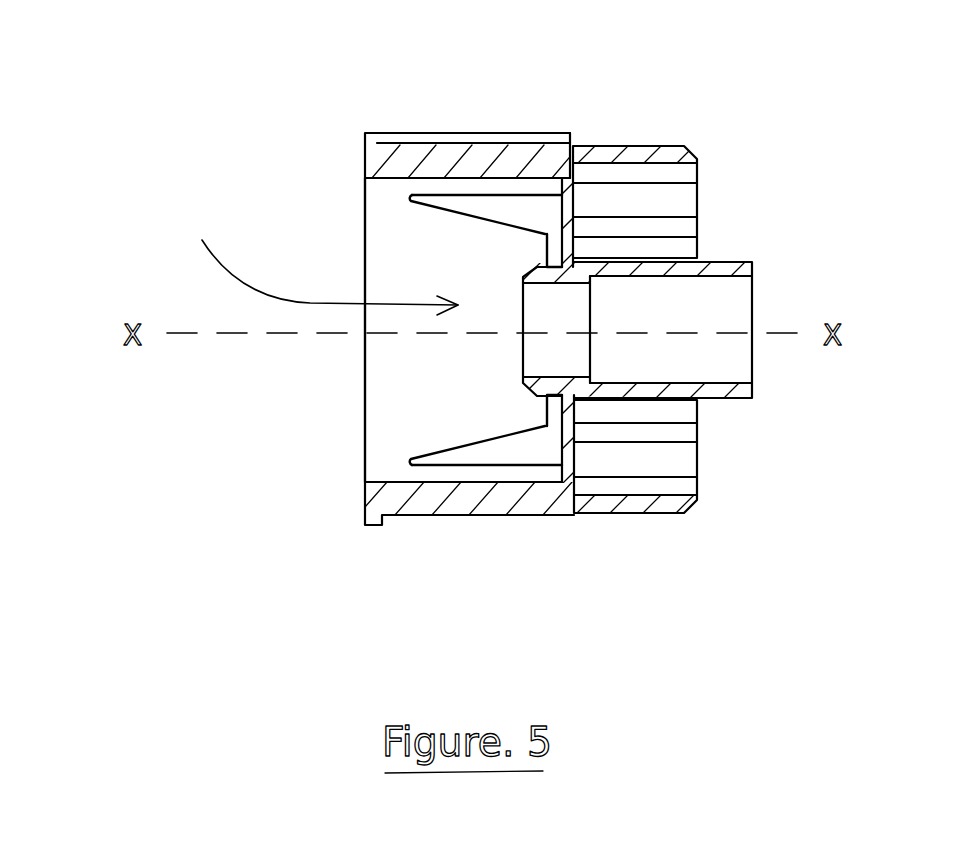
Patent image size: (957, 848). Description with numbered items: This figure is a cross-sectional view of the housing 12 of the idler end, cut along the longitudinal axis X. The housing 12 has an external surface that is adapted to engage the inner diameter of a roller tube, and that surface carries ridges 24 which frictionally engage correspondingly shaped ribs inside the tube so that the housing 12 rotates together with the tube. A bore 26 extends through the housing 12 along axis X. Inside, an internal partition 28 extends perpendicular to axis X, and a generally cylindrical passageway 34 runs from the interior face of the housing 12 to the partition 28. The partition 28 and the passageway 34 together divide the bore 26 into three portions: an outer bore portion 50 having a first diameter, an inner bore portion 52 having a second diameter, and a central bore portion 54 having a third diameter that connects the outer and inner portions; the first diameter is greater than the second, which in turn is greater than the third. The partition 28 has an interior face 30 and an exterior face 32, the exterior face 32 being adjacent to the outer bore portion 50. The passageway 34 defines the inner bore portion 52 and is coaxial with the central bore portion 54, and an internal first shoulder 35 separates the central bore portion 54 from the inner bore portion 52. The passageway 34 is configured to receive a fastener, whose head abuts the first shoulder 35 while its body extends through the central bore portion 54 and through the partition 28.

The housing 12 is at (367, 132).
The ridges 24 is at (488, 132).
The bore 26 is at (314, 258).
The internal partition 28 is at (575, 205).
The interior face 30 is at (577, 457).
The exterior face 32 is at (548, 403).
The passageway 34 is at (647, 390).
The first shoulder 35 is at (606, 290).
The outer bore portion 50 is at (433, 367).
The inner bore portion 52 is at (690, 307).
The central bore portion 54 is at (560, 349).